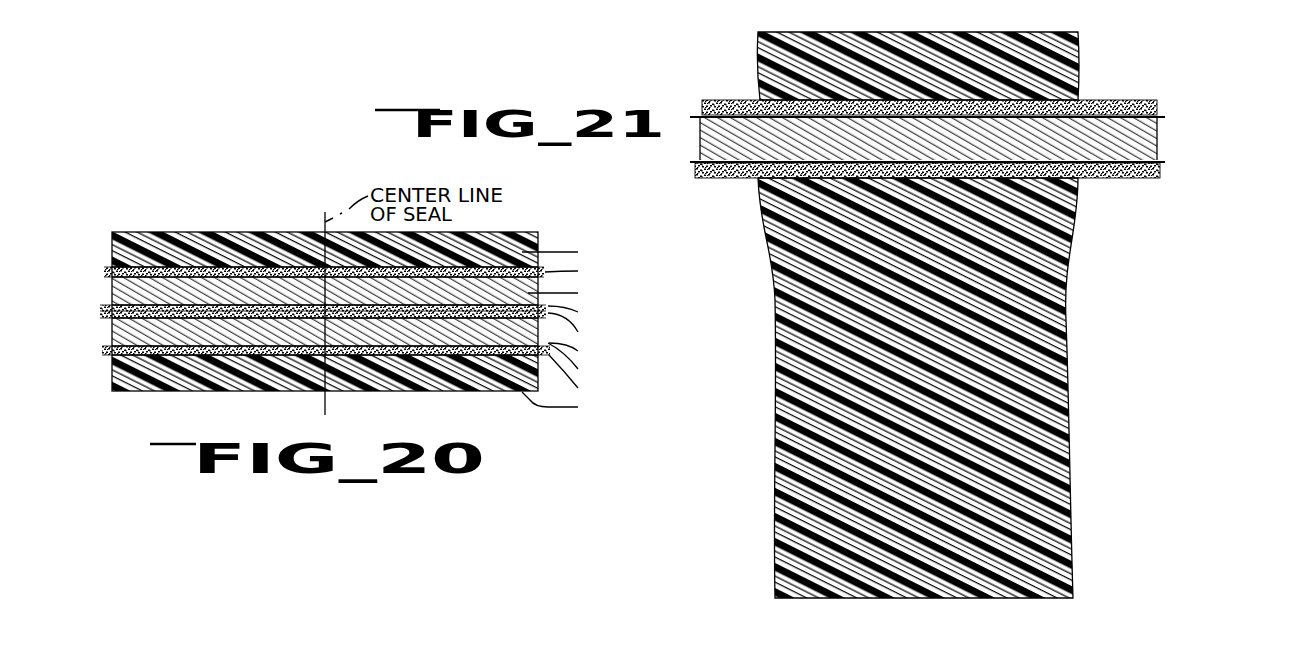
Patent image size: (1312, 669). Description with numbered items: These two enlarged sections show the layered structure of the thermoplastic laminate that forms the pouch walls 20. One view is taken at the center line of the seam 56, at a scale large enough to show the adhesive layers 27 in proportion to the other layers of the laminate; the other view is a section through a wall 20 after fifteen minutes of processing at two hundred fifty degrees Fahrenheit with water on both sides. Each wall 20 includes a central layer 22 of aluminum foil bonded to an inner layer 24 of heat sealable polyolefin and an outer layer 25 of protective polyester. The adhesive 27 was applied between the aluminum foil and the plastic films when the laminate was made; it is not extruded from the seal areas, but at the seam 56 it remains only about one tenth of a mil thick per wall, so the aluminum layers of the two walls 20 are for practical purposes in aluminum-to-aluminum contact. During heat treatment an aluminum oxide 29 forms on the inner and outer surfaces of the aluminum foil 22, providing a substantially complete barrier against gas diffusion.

In FIG. 21, the wall 20 is at (755, 66).
In FIG. 20, the central layer of aluminum foil 22 is at (112, 289).
In FIG. 21, the central layer of aluminum foil 22 is at (1152, 145).
In FIG. 20, the inner layer of heat sealable thermoplastic 24 is at (100, 315).
In FIG. 21, the inner layer of heat sealable thermoplastic 24 is at (1075, 273).
In FIG. 20, the outer layer of protective plastic 25 is at (112, 241).
In FIG. 21, the outer layer of protective plastic 25 is at (1078, 57).
In FIG. 20, the adhesive 27 is at (104, 271).
In FIG. 21, the adhesive 27 is at (1103, 104).
In FIG. 21, the aluminum oxide 29 is at (1166, 119).
In FIG. 20, the seam line 56 is at (285, 209).